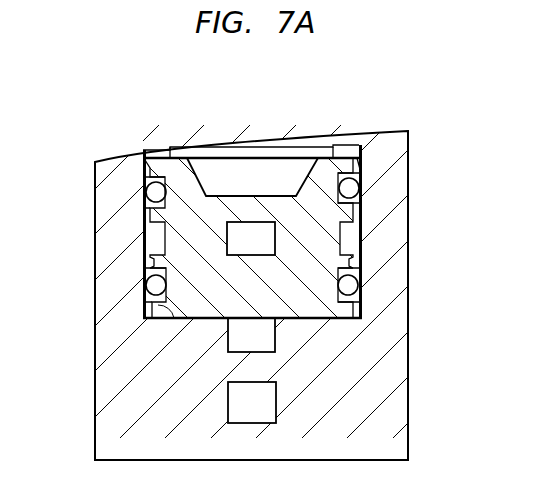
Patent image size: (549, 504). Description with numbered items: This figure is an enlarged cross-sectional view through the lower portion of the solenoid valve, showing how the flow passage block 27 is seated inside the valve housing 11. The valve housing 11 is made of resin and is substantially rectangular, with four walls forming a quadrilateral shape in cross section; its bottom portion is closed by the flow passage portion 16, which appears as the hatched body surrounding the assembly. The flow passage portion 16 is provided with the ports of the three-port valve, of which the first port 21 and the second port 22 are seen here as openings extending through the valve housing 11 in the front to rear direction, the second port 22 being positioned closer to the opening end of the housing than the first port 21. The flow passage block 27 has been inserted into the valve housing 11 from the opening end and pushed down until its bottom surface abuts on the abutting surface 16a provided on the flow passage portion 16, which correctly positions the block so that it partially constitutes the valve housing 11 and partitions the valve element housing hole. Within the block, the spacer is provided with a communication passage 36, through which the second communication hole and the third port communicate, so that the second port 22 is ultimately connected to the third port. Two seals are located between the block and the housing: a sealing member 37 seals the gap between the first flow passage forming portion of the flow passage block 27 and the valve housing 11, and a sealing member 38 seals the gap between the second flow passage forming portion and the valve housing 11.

The valve housing 11 is at (385, 372).
The flow passage portion 16 is at (173, 367).
The abutting surface 16a is at (150, 310).
The first port 21 is at (265, 406).
The second port 22 is at (262, 336).
The flow passage block 27 is at (180, 218).
The communication passage 36 is at (263, 238).
The sealing member 37 is at (350, 285).
The sealing member 38 is at (352, 192).